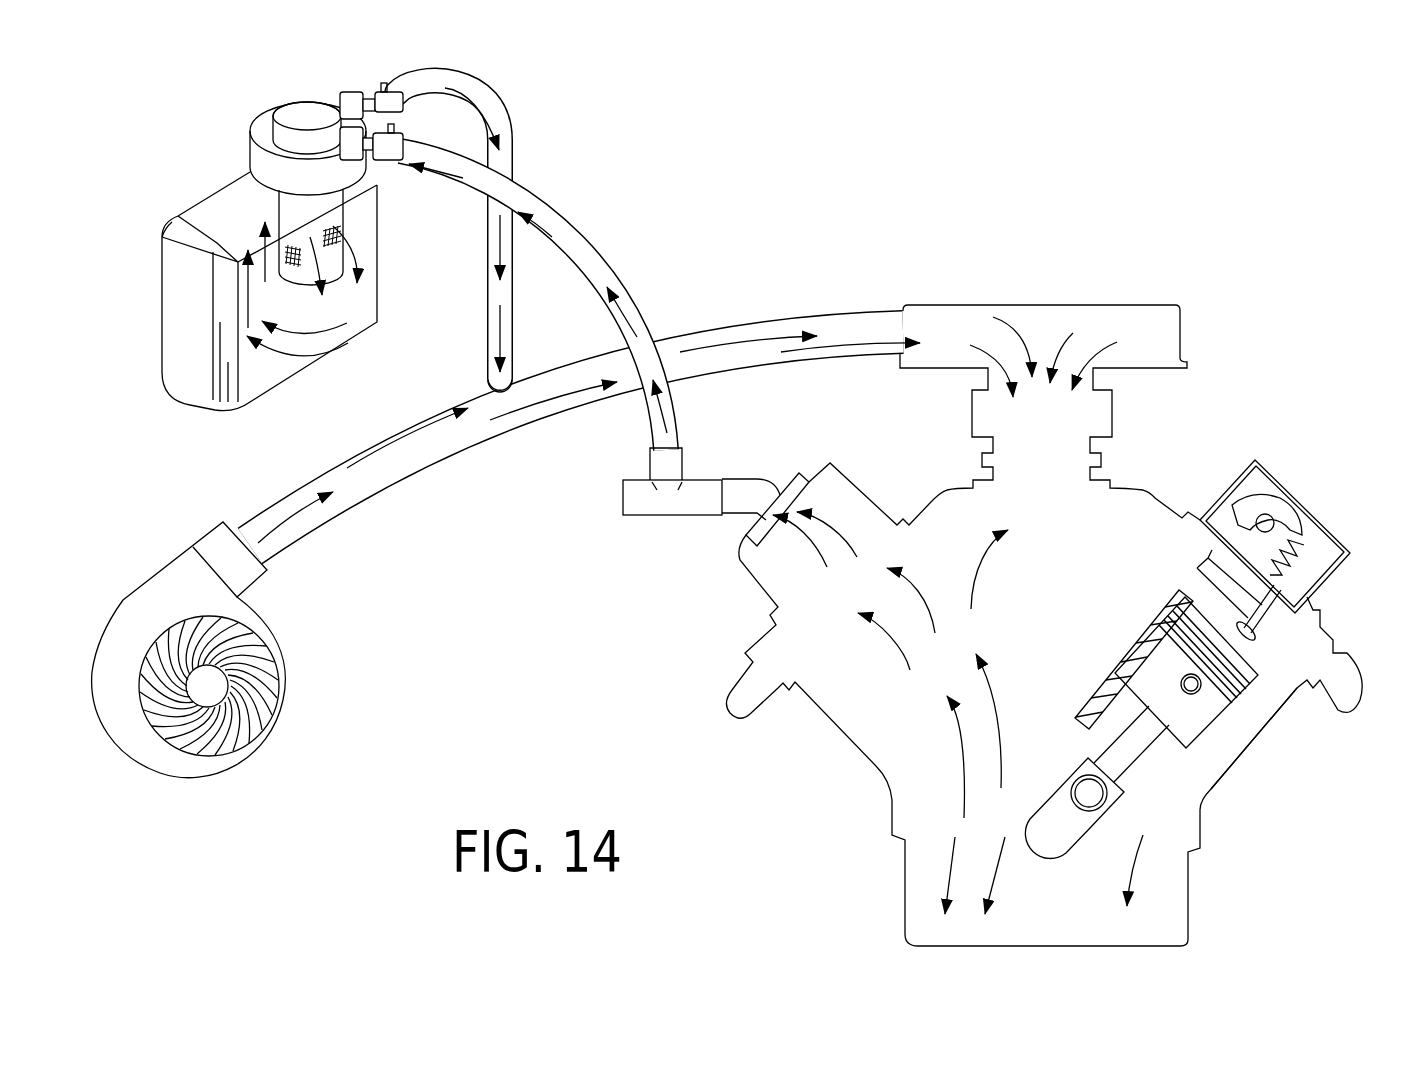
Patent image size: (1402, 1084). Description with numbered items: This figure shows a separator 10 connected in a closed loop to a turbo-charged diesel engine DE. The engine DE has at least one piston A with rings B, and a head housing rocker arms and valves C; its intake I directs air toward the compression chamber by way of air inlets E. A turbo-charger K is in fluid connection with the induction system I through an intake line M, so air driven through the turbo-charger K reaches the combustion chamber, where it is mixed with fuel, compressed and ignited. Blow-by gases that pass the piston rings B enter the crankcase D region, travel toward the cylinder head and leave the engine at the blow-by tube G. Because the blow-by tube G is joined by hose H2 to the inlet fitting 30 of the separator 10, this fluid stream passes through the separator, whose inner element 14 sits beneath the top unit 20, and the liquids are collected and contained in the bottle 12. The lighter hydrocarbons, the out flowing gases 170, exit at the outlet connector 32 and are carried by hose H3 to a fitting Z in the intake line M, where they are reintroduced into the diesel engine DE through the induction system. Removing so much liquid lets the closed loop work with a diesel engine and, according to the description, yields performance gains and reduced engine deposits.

The separator 10 is at (233, 118).
The bottle 12 is at (152, 278).
The separator cylinder 14 is at (272, 210).
The pump unit 20 is at (287, 107).
The inlet fitting 30 is at (368, 160).
The outlet connector 32 is at (378, 103).
The out flowing gases 170 is at (352, 250).
The hose H2 is at (593, 233).
The hose H3 is at (512, 116).
The fitting Z is at (487, 383).
The intake line M is at (377, 490).
The turbo-charger K is at (247, 753).
The blow-by tube G is at (753, 480).
The piston A is at (880, 307).
The diesel engine DE is at (1077, 290).
The intake I is at (1140, 337).
The rocker arms and valves C is at (1303, 510).
The inlet ports E is at (1117, 663).
The rings B is at (1247, 660).
The crankcase D is at (1156, 898).